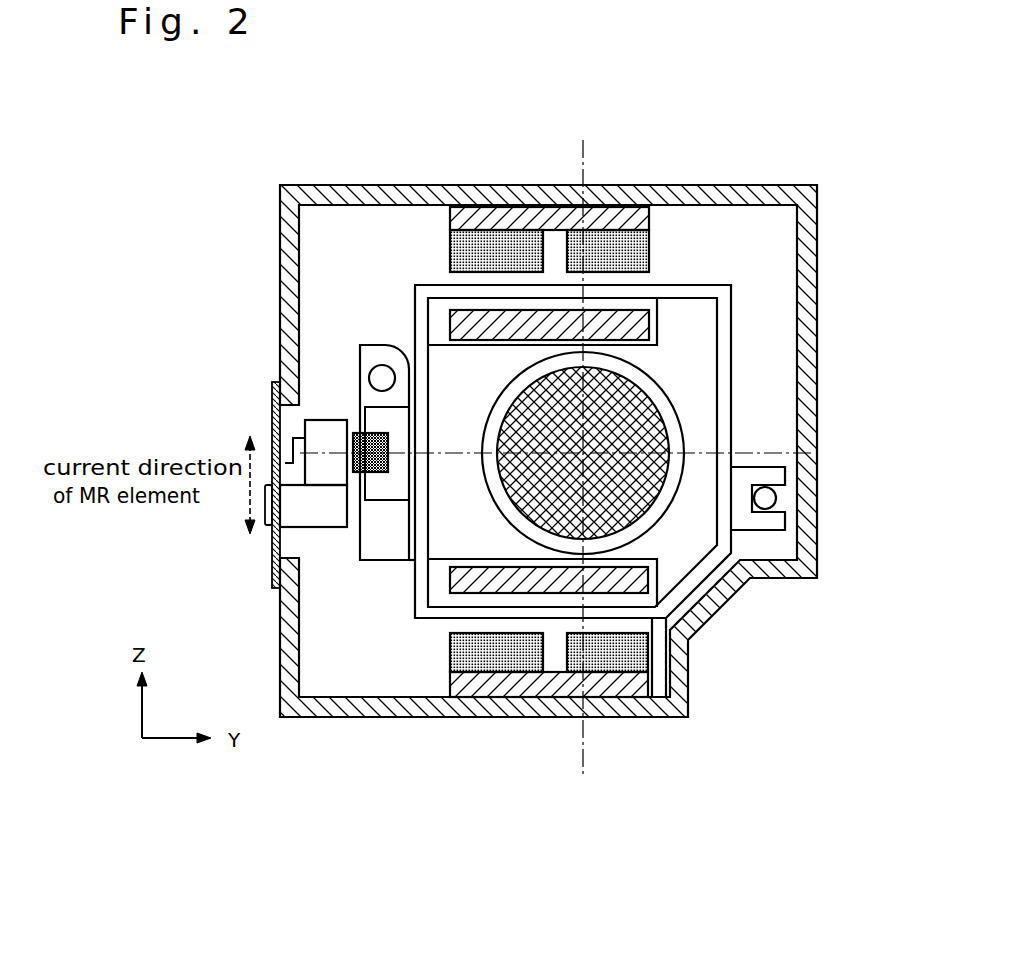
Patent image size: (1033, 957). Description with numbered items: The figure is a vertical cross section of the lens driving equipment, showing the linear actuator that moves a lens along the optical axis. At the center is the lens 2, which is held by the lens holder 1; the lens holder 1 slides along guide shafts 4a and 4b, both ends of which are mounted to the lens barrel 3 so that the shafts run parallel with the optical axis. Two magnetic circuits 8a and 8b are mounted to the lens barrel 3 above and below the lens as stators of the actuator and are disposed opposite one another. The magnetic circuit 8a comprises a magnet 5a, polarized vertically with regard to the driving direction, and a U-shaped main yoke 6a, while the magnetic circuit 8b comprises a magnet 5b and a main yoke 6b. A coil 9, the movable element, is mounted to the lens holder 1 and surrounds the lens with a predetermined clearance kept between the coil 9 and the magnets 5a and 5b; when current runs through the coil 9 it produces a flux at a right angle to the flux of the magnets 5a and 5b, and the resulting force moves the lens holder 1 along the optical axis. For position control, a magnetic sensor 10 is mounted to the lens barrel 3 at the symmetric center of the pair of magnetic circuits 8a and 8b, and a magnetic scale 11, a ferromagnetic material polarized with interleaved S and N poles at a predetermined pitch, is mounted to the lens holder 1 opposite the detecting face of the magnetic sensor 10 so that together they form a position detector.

The lens holder 1 is at (405, 352).
The lens 2 is at (640, 410).
The lens barrel 3 is at (688, 668).
The guide shaft 4a is at (380, 378).
The guide shaft 4b is at (765, 498).
The magnet 5a is at (493, 230).
The magnet 5b is at (524, 655).
The main yoke 6a is at (456, 208).
The main yoke 6b is at (515, 668).
The magnetic circuit 8a is at (519, 175).
The magnetic circuit 8b is at (508, 735).
The coil 9 is at (722, 398).
The magnetic sensor 10 is at (320, 447).
The magnetic scale 11 is at (355, 467).